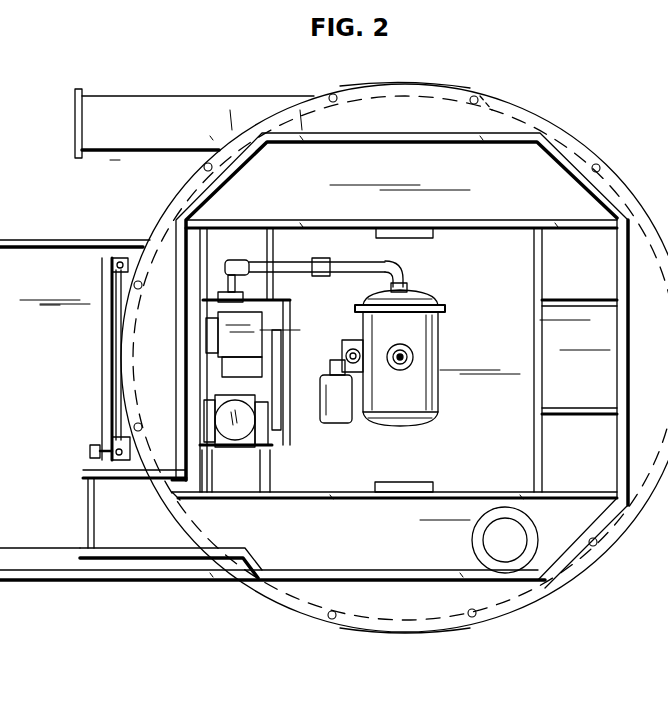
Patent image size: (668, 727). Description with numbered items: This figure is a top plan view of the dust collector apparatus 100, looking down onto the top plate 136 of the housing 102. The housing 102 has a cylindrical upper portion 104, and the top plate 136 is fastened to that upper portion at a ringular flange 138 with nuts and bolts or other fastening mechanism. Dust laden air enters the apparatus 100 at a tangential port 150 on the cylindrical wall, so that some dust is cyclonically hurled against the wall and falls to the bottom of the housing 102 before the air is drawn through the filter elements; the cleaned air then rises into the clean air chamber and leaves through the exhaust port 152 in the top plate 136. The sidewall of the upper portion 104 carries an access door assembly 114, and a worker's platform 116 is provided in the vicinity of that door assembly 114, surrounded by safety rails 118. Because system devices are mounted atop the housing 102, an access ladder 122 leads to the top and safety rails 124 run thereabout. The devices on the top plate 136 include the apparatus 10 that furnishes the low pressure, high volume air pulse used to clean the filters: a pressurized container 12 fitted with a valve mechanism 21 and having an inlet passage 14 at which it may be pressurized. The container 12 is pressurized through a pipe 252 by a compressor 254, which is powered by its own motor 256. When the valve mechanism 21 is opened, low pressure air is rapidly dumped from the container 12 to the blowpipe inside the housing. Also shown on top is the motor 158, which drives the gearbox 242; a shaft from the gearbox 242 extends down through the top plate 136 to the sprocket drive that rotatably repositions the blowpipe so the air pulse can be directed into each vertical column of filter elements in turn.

The dust collector apparatus 100 is at (522, 96).
The housing 102 is at (456, 98).
The cylindrical upper portion 104 is at (497, 102).
The ringular flange 138 is at (400, 84).
The top plate 136 is at (355, 606).
The tangential port 150 is at (181, 98).
The safety rails 124 is at (460, 140).
The access ladder 122 is at (86, 521).
The safety rails 118 is at (47, 240).
The worker's platform 116 is at (28, 558).
The access door assembly 114 is at (100, 411).
The pipe 252 is at (350, 264).
The apparatus 10 is at (421, 340).
The inlet passage 14 is at (410, 287).
The pressurized container 12 is at (442, 341).
The valve mechanism 21 is at (418, 357).
The gearbox 242 is at (349, 348).
The motor 158 is at (343, 424).
The motor 256 is at (218, 337).
The compressor 254 is at (247, 432).
The exhaust port 152 is at (483, 530).